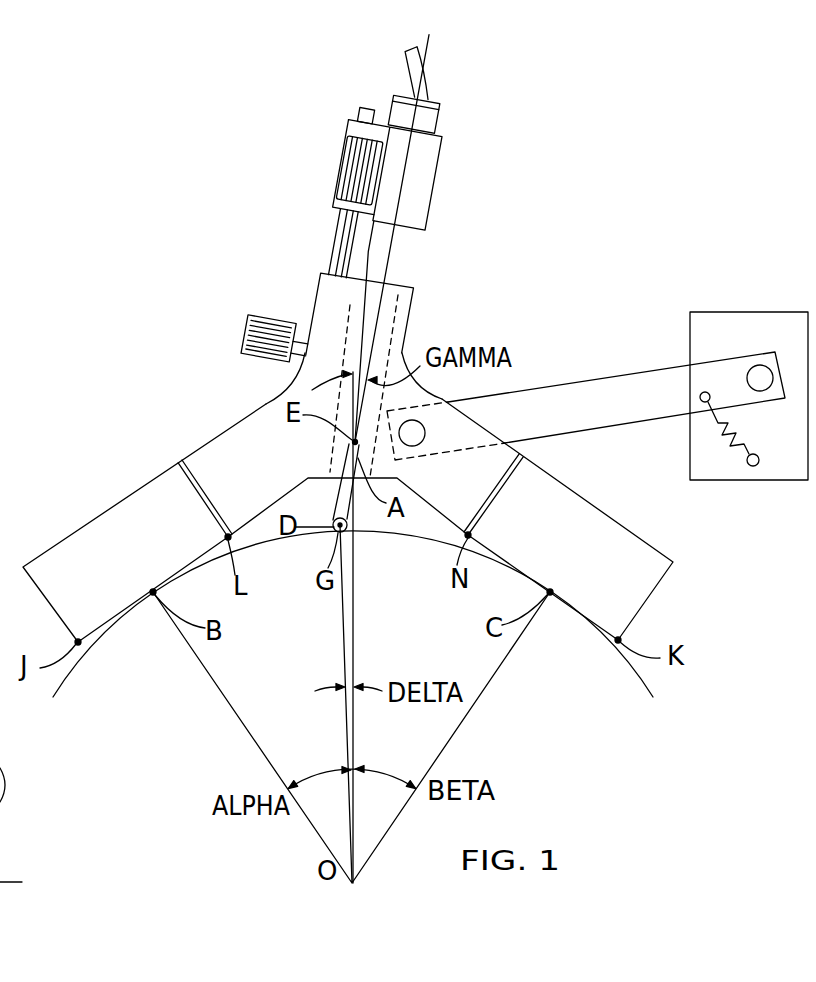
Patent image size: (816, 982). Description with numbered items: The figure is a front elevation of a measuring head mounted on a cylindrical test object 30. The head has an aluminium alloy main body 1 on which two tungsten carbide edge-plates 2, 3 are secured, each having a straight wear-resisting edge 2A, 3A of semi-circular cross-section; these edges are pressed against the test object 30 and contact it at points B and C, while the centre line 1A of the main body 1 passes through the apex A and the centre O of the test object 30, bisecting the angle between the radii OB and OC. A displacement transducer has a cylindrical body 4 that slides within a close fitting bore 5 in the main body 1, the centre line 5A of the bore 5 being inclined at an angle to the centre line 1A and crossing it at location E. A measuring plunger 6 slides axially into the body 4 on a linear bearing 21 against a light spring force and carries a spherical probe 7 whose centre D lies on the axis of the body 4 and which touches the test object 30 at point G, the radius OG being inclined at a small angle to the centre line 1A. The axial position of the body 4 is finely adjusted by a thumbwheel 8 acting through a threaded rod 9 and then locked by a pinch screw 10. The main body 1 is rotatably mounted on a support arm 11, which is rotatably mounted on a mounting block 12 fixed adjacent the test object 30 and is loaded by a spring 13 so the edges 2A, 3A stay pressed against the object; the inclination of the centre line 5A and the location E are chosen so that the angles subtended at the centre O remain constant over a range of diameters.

The main body 1 is at (208, 455).
The centre line 1A is at (357, 614).
The edge-plate 2 is at (135, 515).
The wear resisting edge 2A is at (100, 636).
The edge-plate 3 is at (570, 507).
The wear resisting edge 3A is at (597, 630).
The body 4 is at (403, 262).
The bore 5 is at (350, 308).
The centre line 5A is at (390, 260).
The measuring plunger 6 is at (332, 500).
The spherical probe 7 is at (335, 530).
The thumbwheel 8 is at (342, 157).
The threaded rod 9 is at (337, 242).
The pinch screw 10 is at (243, 322).
The support arm 11 is at (592, 390).
The mounting block 12 is at (700, 320).
The spring 13 is at (717, 440).
The linear bearing 21 is at (333, 465).
The test object 30 is at (63, 678).